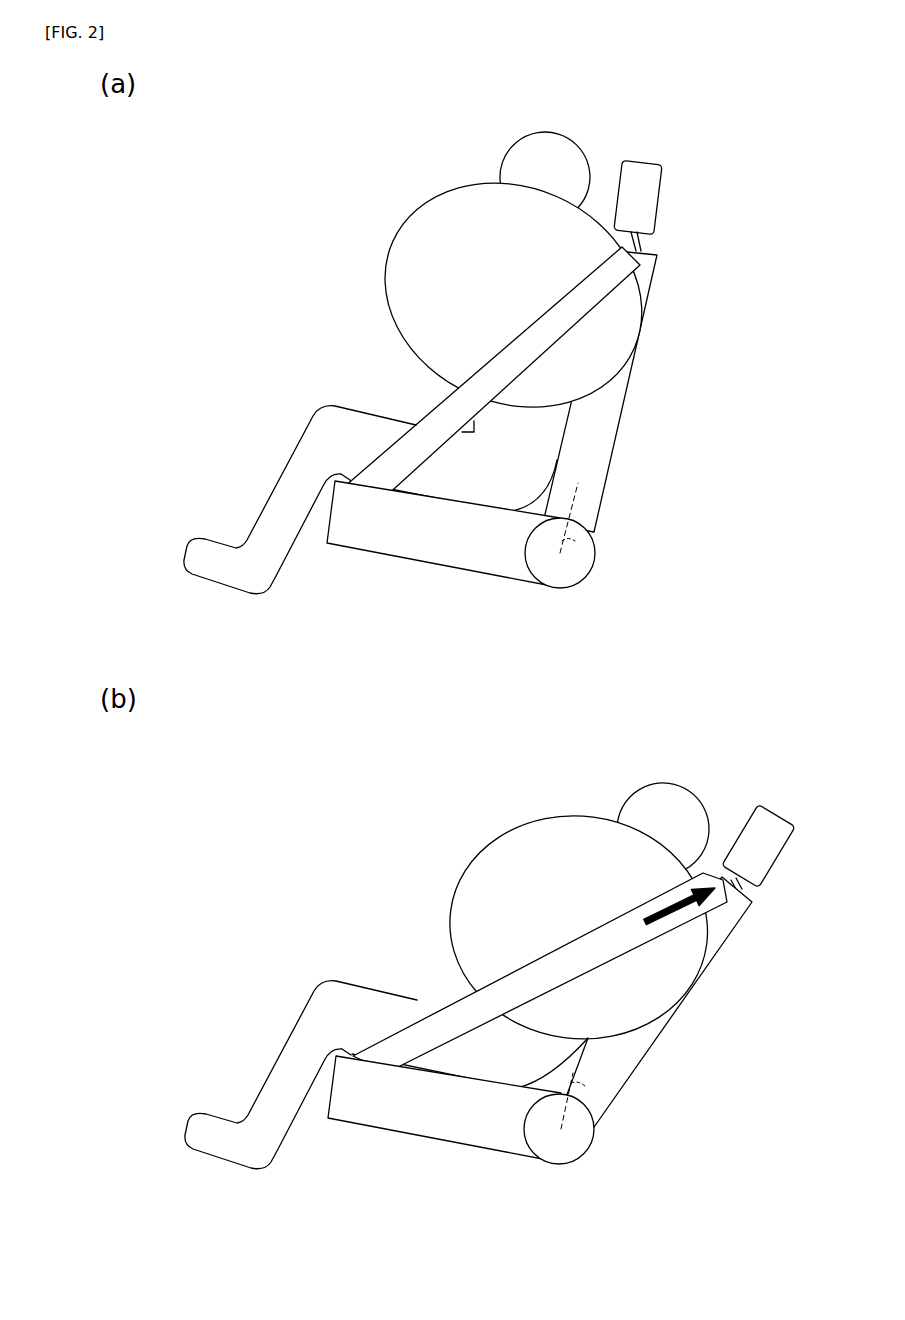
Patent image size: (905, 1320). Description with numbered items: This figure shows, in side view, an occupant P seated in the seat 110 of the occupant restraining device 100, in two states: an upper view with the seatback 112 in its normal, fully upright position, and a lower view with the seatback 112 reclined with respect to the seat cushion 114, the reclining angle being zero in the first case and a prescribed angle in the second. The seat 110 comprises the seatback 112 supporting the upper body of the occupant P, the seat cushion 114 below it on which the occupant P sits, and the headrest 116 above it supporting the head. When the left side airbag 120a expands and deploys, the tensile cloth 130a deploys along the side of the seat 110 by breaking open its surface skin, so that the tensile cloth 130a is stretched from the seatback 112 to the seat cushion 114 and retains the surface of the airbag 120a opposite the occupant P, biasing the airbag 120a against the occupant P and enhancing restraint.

The occupant restraining device 100 is at (503, 626).
The seat 110 is at (683, 645).
The seatback 112 is at (598, 443).
The seat cushion 114 is at (430, 552).
The headrest 116 is at (653, 193).
The left side airbag 120a is at (410, 255).
The tensile cloth 130a is at (443, 418).
The occupant P is at (578, 132).